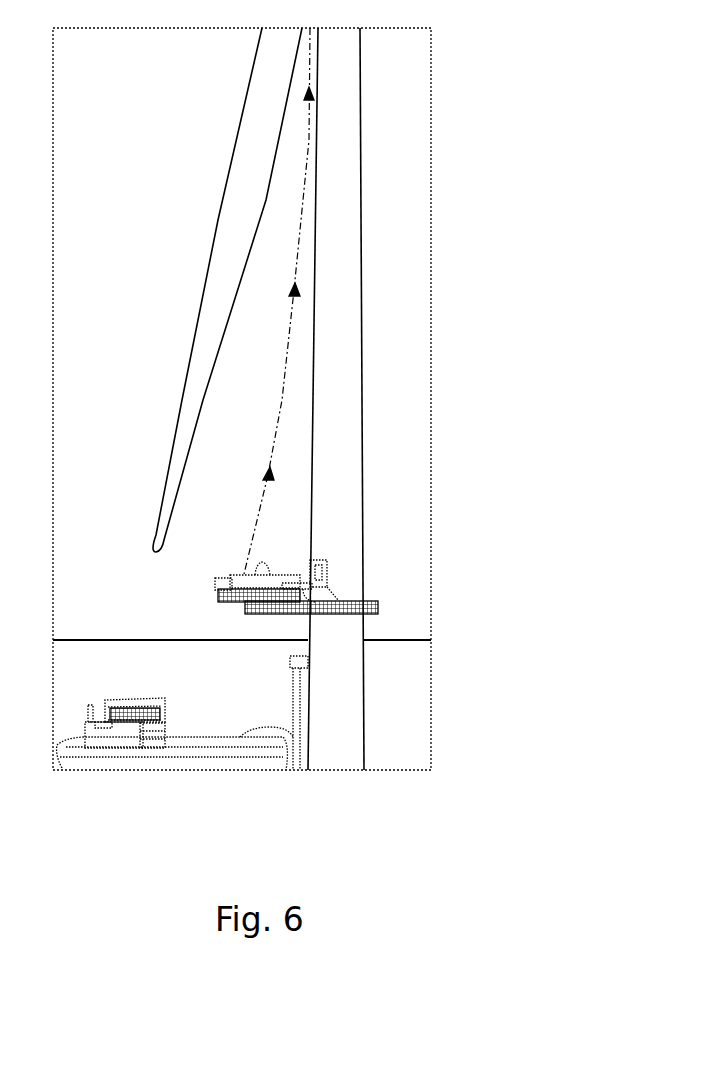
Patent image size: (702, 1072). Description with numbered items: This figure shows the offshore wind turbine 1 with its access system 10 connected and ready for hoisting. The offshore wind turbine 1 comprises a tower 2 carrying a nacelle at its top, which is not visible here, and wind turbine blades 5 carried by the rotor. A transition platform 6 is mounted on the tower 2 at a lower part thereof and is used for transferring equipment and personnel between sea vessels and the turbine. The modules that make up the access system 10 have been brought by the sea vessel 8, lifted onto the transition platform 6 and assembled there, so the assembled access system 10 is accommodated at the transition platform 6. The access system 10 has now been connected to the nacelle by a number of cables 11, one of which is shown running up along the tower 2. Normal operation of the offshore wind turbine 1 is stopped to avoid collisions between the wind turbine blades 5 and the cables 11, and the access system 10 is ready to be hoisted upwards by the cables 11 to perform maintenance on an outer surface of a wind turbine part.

The offshore wind turbine 1 is at (459, 75).
The tower 2 is at (345, 328).
The wind turbine blades 5 is at (238, 183).
The transition platform 6 is at (366, 608).
The sea vessel 8 is at (175, 762).
The access system 10 is at (245, 582).
The cables 11 is at (300, 233).